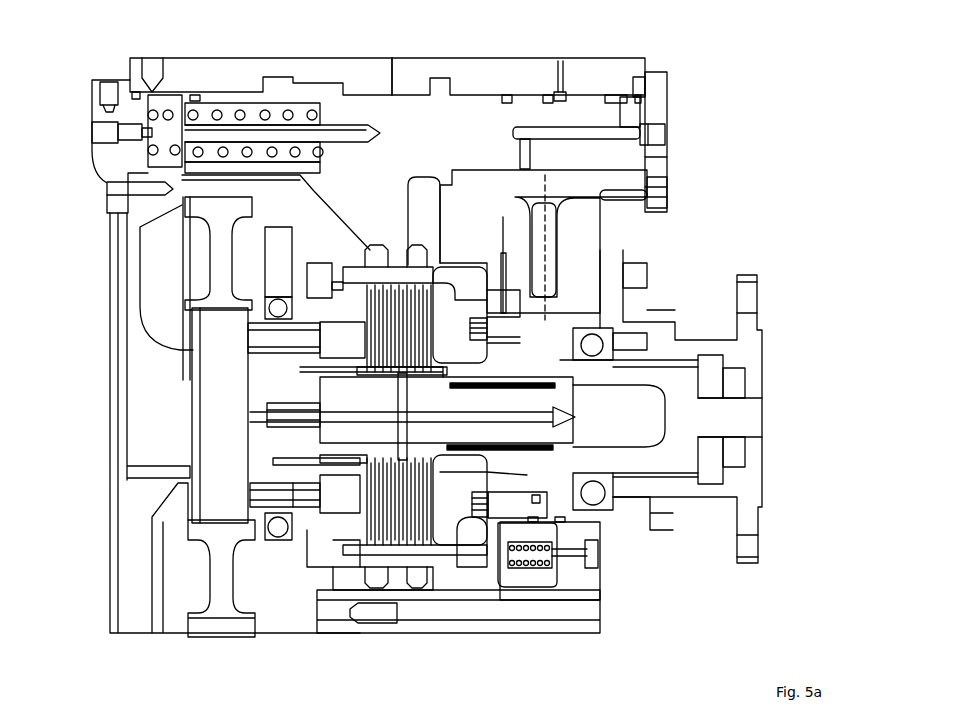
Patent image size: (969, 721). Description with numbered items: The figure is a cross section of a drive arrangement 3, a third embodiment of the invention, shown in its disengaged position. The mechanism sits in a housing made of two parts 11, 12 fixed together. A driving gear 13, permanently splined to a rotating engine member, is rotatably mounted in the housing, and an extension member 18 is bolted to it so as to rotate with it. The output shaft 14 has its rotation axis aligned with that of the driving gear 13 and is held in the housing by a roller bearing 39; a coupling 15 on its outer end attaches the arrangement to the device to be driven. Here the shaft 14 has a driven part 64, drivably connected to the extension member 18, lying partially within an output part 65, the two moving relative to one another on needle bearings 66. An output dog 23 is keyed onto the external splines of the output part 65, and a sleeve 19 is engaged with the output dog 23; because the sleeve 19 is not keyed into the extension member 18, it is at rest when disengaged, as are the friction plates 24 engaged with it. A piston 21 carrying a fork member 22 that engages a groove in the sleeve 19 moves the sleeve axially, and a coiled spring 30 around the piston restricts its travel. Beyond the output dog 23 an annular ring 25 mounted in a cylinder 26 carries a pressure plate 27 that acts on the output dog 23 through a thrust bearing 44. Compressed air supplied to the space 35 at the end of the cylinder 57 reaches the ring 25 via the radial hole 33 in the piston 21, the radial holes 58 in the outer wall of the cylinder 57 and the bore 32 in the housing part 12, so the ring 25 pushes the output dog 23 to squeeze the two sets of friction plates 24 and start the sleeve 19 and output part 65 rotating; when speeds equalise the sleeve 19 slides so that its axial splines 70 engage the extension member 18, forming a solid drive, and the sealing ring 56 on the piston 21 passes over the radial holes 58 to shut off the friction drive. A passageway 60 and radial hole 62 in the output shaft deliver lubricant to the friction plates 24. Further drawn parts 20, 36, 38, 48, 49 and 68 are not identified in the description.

The drive arrangement 3 is at (797, 270).
The housing part 11 is at (378, 60).
The housing part 12 is at (440, 60).
The driving gear 13 is at (222, 640).
The output shaft 14 is at (675, 460).
The coupling 15 is at (757, 494).
The extension member 18 is at (322, 560).
The sleeve 19 is at (363, 562).
The hub 20 is at (392, 582).
The piston 21 is at (473, 100).
The fork member 22 is at (397, 209).
The output dog 23 is at (440, 303).
The friction plates 24 is at (410, 543).
The annular ring 25 is at (600, 525).
The cylinder 26 is at (555, 452).
The pressure plate 27 is at (503, 257).
The coiled spring 30 is at (193, 152).
The bore 32 is at (550, 245).
The radial hole 33 is at (520, 150).
The space 35 is at (668, 158).
The bracket 36 is at (587, 132).
The bearing 38 is at (280, 540).
The roller bearing 39 is at (594, 345).
The thrust bearing 44 is at (538, 508).
The bolt 48 is at (102, 90).
The plug 49 is at (107, 132).
The sealing ring 56 is at (561, 92).
The cylinder 57 is at (668, 180).
The radial holes 58 is at (647, 187).
The passageway 60 is at (390, 420).
The radial hole 62 is at (395, 440).
The driven part 64 is at (465, 523).
The output part 65 is at (658, 373).
The needle bearings 66 is at (588, 507).
The seal 68 is at (443, 547).
The axial splines 70 is at (322, 290).